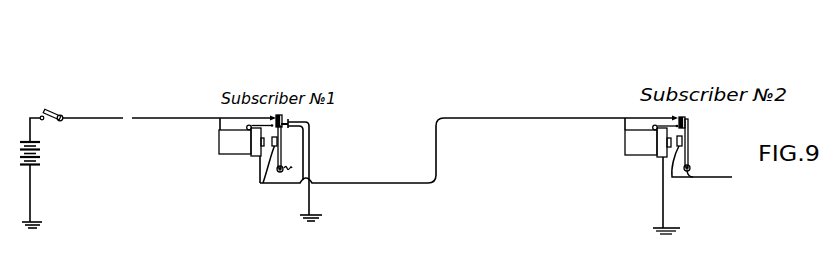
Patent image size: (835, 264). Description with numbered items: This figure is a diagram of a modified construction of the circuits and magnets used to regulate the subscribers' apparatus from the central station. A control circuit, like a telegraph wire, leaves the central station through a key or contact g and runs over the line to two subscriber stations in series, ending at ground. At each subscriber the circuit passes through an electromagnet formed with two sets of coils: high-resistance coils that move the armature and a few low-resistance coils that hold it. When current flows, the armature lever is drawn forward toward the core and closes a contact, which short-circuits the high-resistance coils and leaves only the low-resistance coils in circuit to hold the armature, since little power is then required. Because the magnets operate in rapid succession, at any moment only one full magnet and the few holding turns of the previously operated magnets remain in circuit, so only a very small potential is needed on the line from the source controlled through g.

The contacts g is at (51, 103).